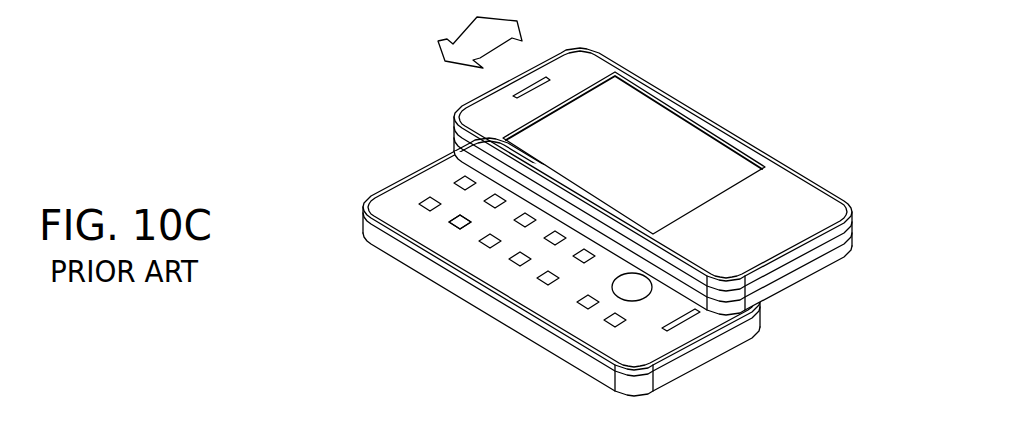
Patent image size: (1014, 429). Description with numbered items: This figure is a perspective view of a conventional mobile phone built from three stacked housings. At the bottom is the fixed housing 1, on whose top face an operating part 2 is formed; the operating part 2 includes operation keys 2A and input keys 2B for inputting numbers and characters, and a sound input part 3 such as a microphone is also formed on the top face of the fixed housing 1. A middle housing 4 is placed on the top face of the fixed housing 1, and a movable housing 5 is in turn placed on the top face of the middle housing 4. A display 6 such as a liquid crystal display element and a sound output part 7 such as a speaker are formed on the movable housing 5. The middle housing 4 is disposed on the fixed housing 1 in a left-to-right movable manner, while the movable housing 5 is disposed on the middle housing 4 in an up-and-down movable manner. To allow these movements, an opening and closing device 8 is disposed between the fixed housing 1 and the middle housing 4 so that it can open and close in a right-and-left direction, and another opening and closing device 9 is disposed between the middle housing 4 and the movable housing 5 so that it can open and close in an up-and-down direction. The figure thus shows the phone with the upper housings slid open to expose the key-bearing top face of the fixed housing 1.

The fixed housing 1 is at (370, 232).
The operating part 2 is at (503, 294).
The operation keys 2A is at (512, 258).
The input keys 2B is at (625, 293).
The sound input part 3 is at (693, 312).
The middle housing 4 is at (780, 283).
The movable housing 5 is at (797, 210).
The display 6 is at (682, 140).
The sound output part 7 is at (514, 93).
The opening and closing device 8 is at (725, 313).
The opening and closing device 9 is at (823, 257).